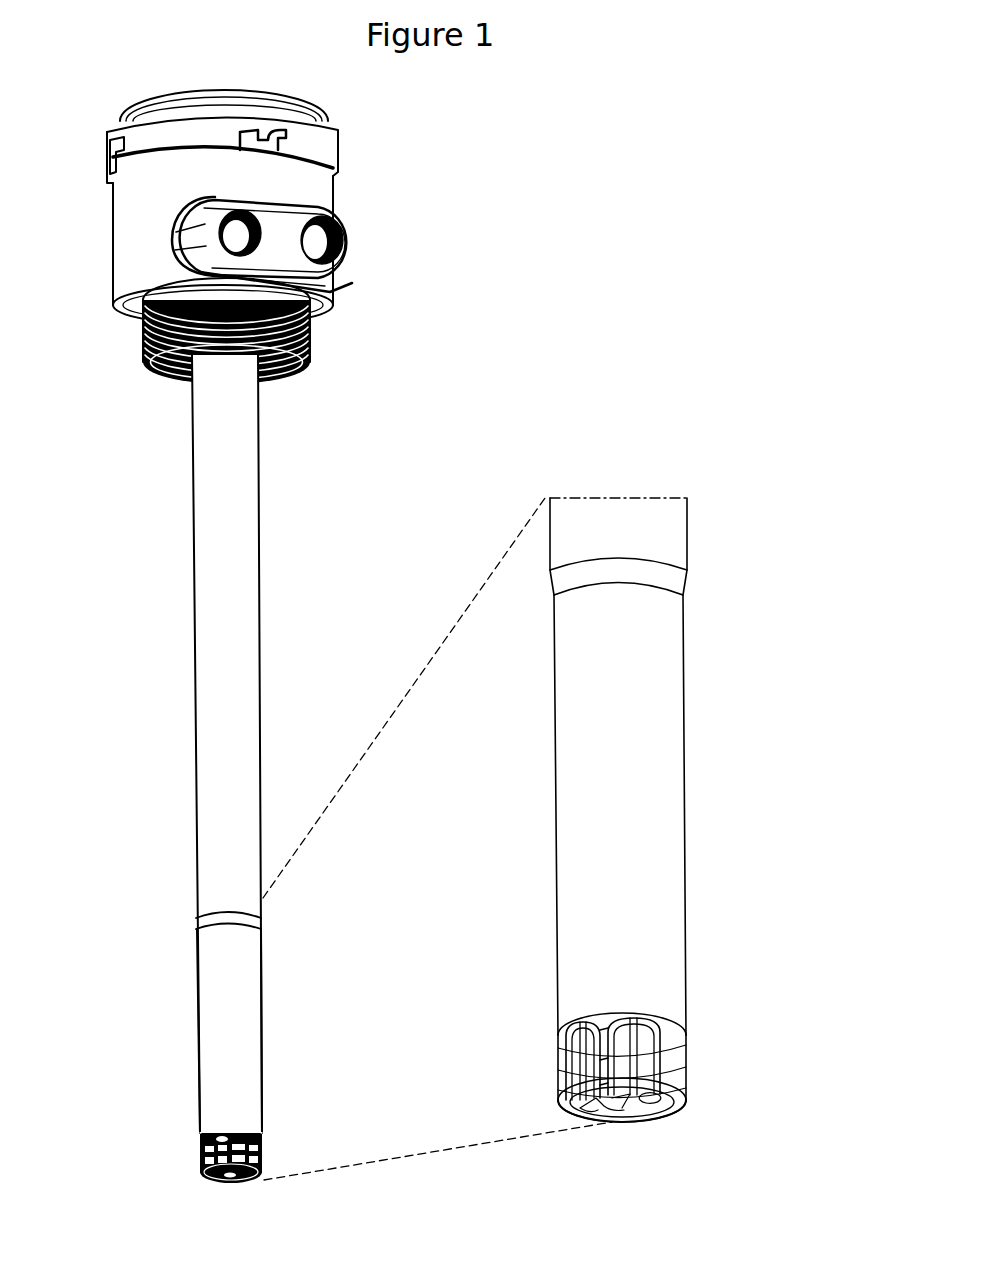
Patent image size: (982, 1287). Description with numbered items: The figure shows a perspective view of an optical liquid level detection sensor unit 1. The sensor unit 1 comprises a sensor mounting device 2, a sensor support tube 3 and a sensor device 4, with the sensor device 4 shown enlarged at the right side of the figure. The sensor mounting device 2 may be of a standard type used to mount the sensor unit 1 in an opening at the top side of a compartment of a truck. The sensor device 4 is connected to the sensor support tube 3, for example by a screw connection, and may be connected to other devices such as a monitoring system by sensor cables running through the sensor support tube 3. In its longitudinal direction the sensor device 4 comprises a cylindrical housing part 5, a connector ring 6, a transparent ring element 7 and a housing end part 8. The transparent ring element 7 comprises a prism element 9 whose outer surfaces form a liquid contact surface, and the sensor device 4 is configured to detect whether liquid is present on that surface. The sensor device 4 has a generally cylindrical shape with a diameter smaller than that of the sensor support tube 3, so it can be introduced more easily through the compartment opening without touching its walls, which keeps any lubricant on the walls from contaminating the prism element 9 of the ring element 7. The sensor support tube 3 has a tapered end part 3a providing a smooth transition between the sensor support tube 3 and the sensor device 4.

The sensor unit 1 is at (379, 413).
The sensor mounting device 2 is at (168, 180).
The sensor support tube 3 is at (213, 588).
The tapered end part 3a is at (198, 930).
The sensor device 4 is at (212, 1035).
The cylindrical housing part 5 is at (662, 684).
The connector ring 6 is at (675, 1035).
The transparent ring element 7 is at (675, 1058).
The housing end part 8 is at (680, 1082).
The prism element 9 is at (605, 1053).